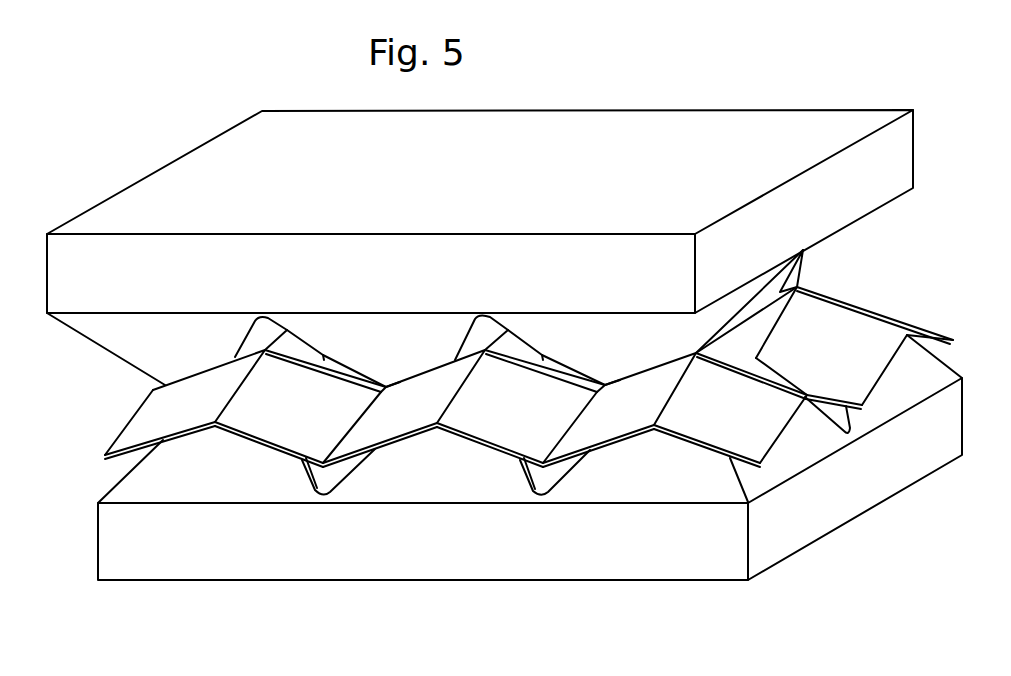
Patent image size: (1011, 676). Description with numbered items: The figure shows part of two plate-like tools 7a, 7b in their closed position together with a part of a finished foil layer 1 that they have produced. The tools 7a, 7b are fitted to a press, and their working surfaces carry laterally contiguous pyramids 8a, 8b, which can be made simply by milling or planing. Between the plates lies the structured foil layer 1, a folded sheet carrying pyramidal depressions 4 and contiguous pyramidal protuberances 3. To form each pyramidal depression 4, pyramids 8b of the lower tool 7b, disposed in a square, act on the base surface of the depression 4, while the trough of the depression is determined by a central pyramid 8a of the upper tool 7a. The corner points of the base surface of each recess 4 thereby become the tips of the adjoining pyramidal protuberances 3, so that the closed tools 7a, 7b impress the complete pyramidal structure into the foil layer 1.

The foil layer 1 is at (897, 302).
The pyramidal protuberance 3 is at (262, 349).
The pyramidal depression 4 is at (398, 379).
The plate-like tool 7a is at (902, 140).
The plate-like tool 7b is at (943, 413).
The pyramid 8a is at (118, 342).
The pyramid 8b is at (613, 480).